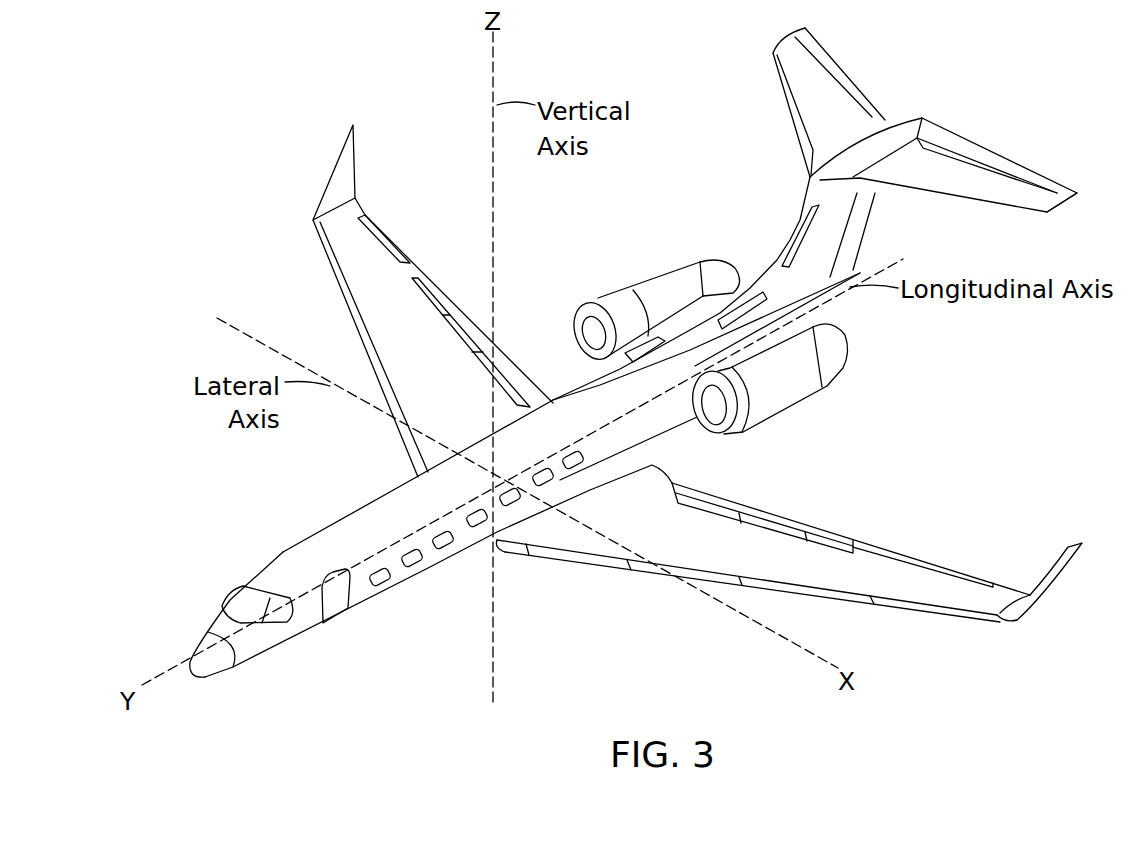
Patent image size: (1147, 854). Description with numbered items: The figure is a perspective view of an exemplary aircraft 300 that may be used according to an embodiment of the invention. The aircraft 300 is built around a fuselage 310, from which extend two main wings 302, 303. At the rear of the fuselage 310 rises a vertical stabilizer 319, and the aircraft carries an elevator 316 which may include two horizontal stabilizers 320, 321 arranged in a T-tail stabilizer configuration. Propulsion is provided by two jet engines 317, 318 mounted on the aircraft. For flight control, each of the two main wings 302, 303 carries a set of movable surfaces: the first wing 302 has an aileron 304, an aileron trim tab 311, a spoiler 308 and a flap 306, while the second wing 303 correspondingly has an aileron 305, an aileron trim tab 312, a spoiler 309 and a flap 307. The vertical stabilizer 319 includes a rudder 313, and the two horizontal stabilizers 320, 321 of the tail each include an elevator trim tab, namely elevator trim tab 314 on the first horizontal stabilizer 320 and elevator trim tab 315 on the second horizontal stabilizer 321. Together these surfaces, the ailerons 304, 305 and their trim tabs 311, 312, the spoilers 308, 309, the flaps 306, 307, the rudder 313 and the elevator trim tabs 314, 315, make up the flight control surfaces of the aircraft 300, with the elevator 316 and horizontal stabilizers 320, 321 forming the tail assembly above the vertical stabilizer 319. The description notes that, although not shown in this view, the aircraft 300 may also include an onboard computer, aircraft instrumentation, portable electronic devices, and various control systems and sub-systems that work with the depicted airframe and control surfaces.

The aircraft 300 is at (220, 124).
The main wing 302 is at (337, 233).
The main wing 303 is at (1013, 595).
The aileron 304 is at (355, 277).
The aileron 305 is at (962, 595).
The flap 306 is at (446, 283).
The flap 307 is at (870, 538).
The spoiler 308 is at (485, 372).
The spoiler 309 is at (822, 530).
The fuselage 310 is at (283, 552).
The aileron trim tab 311 is at (390, 232).
The aileron trim tab 312 is at (930, 557).
The rudder 313 is at (870, 232).
The elevator trim tab 314 is at (845, 68).
The elevator trim tab 315 is at (995, 162).
The elevator 316 is at (926, 136).
The jet engine 317 is at (643, 285).
The jet engine 318 is at (787, 378).
The vertical stabilizer 319 is at (808, 194).
The horizontal stabilizer 320 is at (806, 101).
The horizontal stabilizer 321 is at (1075, 197).